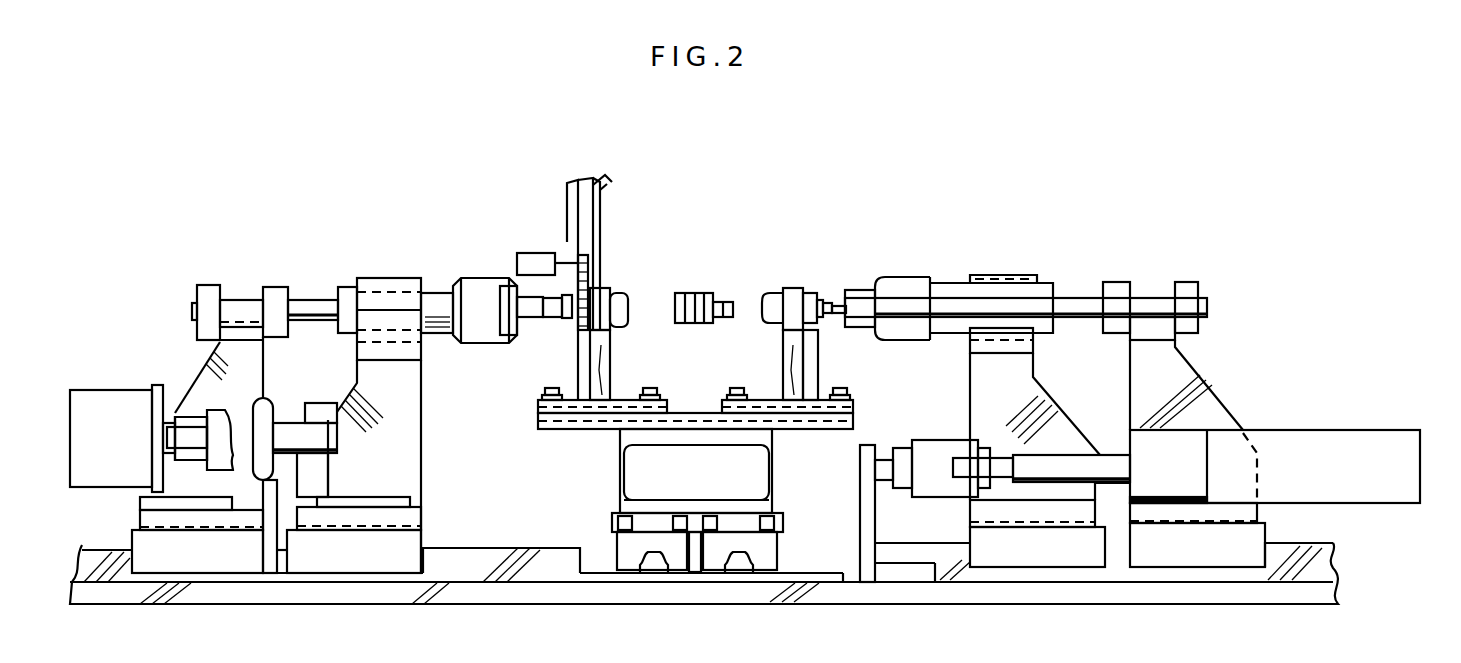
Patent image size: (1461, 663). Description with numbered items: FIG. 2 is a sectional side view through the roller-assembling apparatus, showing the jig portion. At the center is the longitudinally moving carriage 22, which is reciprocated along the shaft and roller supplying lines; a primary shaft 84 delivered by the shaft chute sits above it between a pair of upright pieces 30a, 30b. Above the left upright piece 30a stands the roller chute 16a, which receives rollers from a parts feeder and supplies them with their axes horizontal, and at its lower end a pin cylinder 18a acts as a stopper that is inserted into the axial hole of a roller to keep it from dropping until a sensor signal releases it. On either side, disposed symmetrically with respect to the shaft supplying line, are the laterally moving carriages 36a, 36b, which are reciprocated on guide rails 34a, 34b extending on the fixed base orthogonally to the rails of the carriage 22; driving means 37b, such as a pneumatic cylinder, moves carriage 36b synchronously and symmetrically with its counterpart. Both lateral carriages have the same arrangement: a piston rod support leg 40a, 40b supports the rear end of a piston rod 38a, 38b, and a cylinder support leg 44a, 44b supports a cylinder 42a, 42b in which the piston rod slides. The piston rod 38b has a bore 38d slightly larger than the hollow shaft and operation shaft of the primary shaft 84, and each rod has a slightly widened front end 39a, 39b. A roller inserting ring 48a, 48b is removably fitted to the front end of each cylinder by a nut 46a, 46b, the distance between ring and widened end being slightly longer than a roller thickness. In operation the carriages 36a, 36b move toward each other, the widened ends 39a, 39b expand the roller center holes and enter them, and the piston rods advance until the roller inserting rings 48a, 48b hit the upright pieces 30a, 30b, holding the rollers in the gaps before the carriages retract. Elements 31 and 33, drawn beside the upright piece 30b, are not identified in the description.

The roller chute 16a is at (582, 218).
The pin cylinder 18a is at (537, 263).
The longitudinally moving carriage 22 is at (578, 422).
The upright piece 30a is at (600, 383).
The upright piece 30b is at (818, 370).
The flange 31 is at (793, 290).
The cap 33 is at (773, 293).
The guide rail 34a is at (508, 550).
The guide rail 34b is at (1325, 545).
The laterally moving carriage 36a is at (165, 286).
The laterally moving carriage 36b is at (1268, 406).
The driving means 37b is at (1357, 443).
The piston rod 38a is at (317, 305).
The piston rod 38b is at (1083, 297).
The bore 38d is at (815, 343).
The widened front end 39a is at (540, 320).
The widened front end 39b is at (817, 303).
The piston rod support leg 40a is at (200, 377).
The piston rod support leg 40b is at (1197, 377).
The cylinder 42a is at (437, 292).
The cylinder 42b is at (960, 280).
The cylinder support leg 44a is at (421, 413).
The cylinder support leg 44b is at (1048, 388).
The nut 46a is at (485, 288).
The nut 46b is at (883, 282).
The roller inserting ring 48a is at (520, 343).
The roller inserting ring 48b is at (865, 290).
The primary shaft 84 is at (695, 280).